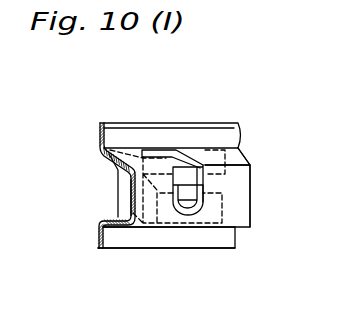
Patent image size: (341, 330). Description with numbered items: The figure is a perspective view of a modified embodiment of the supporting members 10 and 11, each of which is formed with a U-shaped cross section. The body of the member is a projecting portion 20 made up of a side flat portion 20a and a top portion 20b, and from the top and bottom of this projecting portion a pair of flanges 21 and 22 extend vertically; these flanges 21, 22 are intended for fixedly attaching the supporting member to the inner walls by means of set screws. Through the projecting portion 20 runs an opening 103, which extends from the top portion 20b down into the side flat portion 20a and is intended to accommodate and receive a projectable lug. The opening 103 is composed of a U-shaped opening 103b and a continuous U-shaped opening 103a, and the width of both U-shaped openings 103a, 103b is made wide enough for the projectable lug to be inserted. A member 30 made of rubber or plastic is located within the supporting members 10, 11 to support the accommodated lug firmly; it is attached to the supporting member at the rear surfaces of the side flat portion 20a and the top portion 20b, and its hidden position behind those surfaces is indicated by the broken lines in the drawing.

The supporting member 10 is at (98, 156).
The supporting member 11 is at (113, 185).
The projecting portion 20 is at (128, 182).
The side flat portion 20a is at (233, 176).
The top portion 20b is at (237, 156).
The flange 21 is at (147, 133).
The flange 22 is at (130, 238).
The member made of rubber or plastic 30 is at (127, 200).
The opening 103 is at (188, 211).
The U-shaped opening 103a is at (235, 202).
The U-shaped opening 103b is at (202, 160).